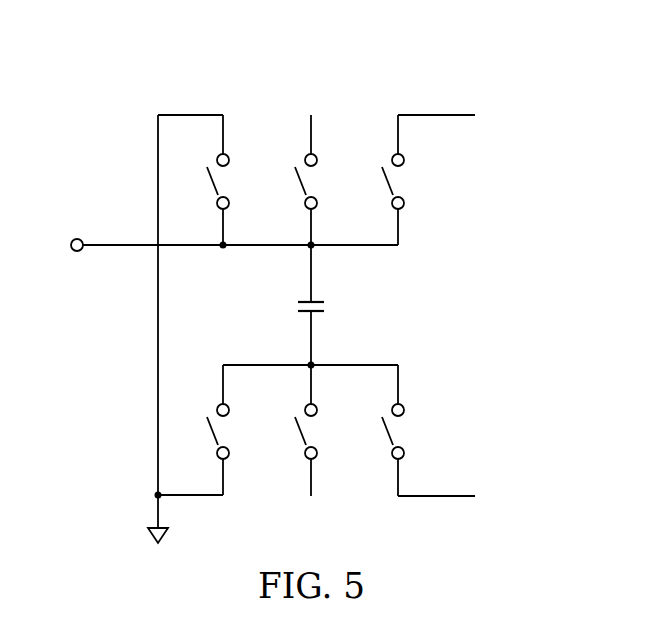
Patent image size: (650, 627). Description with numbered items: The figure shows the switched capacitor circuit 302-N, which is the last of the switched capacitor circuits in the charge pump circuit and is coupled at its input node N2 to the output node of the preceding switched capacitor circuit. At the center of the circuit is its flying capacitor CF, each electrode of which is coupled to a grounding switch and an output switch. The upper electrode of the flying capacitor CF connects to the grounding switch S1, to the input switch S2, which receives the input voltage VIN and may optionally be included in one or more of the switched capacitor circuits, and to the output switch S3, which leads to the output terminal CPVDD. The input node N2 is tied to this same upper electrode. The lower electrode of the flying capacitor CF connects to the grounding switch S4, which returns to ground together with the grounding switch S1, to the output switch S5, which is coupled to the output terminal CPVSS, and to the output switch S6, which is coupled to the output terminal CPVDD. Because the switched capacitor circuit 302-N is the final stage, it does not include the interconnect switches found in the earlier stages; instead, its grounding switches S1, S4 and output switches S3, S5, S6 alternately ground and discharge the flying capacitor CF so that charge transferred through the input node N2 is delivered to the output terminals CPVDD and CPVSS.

The switched capacitor circuit 302-N is at (141, 64).
The grounding switch S1 is at (227, 181).
The input switch S2 is at (315, 181).
The output switch S3 is at (402, 181).
The grounding switch S4 is at (227, 431).
The output switch S5 is at (315, 431).
The output switch S6 is at (402, 431).
The flying capacitor CF is at (324, 306).
The input node N2 is at (60, 246).
The input voltage VIN is at (311, 100).
The output terminal CPVDD is at (515, 306).
The output terminal CPVSS is at (311, 513).